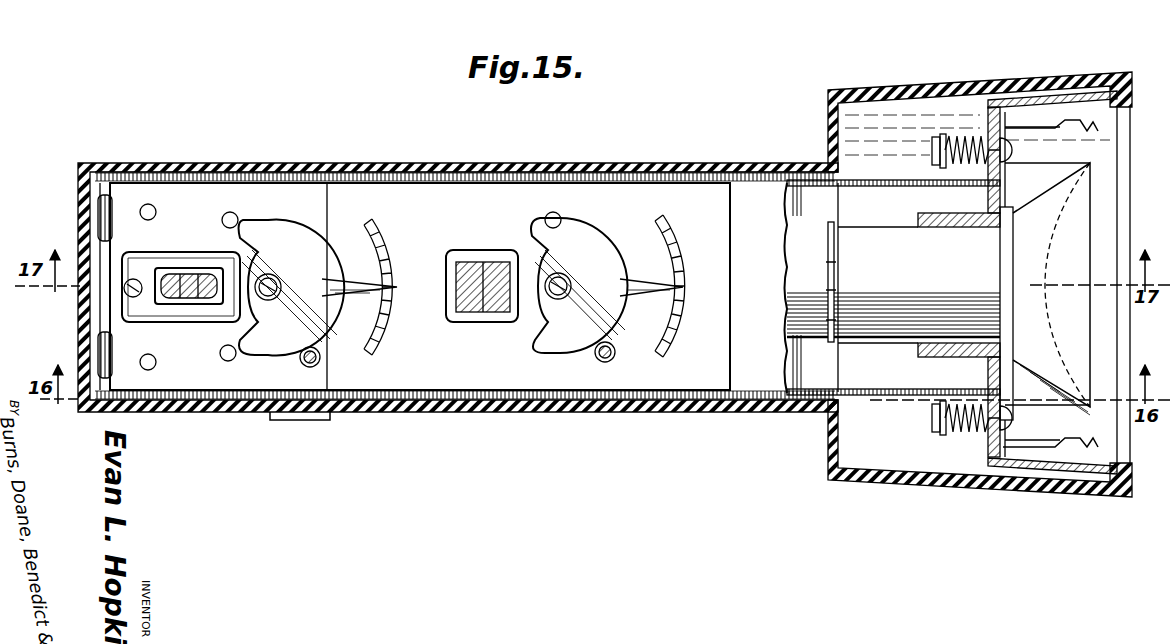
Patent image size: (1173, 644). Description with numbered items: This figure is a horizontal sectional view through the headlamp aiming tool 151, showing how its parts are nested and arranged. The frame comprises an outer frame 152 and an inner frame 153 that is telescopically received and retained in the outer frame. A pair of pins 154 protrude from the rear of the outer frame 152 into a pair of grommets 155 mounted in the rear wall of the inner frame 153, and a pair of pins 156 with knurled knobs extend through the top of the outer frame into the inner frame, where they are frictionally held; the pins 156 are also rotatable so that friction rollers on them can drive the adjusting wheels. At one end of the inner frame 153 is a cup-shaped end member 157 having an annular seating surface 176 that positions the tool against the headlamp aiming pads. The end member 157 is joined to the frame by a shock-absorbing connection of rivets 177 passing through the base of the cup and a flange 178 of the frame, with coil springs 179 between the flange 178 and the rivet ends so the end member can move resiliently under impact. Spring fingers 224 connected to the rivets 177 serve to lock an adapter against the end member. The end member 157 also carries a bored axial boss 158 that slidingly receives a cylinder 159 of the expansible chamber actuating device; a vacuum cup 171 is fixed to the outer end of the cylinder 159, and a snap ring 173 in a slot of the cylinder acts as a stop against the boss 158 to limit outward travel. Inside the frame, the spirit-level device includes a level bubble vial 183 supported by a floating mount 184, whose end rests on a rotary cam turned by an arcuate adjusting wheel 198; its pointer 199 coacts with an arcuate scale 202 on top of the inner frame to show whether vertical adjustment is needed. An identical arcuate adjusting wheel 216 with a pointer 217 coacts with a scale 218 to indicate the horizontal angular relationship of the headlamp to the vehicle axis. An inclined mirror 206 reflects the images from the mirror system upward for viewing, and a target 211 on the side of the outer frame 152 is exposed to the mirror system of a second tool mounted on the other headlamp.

The headlamp aiming tool 151 is at (668, 137).
The outer frame 152 is at (455, 163).
The inner frame 153 is at (850, 396).
The pins 154 is at (82, 214).
The grommets 155 is at (108, 198).
The pins 156 is at (300, 362).
The cup-shaped end member 157 is at (1012, 142).
The bored axial boss 158 is at (960, 358).
The cylinder 159 is at (848, 232).
The vacuum cup 171 is at (1062, 188).
The snap ring 173 is at (836, 262).
The annular seating surface 176 is at (1144, 62).
The rivets 177 is at (932, 152).
The flange 178 is at (992, 140).
The coil springs 179 is at (944, 140).
The level bubble vial 183 is at (172, 300).
The floating mount 184 is at (140, 278).
The arcuate adjusting wheel 198 is at (292, 232).
The pointer 199 is at (350, 278).
The arcuate scale 202 is at (378, 222).
The inclined mirror 206 is at (460, 313).
The target 211 is at (300, 420).
The arcuate adjusting wheel 216 is at (575, 224).
The pointer 217 is at (690, 289).
The scale 218 is at (688, 266).
The spring fingers 224 is at (1060, 134).